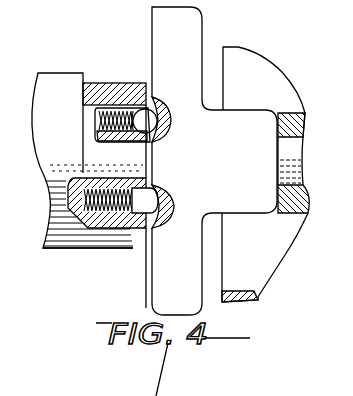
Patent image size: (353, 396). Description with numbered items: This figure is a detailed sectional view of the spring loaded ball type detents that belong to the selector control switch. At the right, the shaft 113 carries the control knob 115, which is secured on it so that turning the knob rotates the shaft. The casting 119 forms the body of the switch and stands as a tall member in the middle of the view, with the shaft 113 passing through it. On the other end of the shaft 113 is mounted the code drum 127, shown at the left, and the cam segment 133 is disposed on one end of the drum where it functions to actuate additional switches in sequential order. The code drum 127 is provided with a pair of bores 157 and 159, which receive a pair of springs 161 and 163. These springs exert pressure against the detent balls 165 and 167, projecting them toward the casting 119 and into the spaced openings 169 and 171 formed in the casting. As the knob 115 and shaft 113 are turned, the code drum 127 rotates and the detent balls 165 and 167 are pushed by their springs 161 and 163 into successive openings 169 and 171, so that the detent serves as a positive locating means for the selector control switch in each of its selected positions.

The shaft 113 is at (294, 154).
The control knob 115 is at (281, 88).
The casting 119 is at (198, 47).
The code drum 127 is at (55, 80).
The cam segment 133 is at (109, 250).
The bore 157 is at (118, 97).
The bore 159 is at (88, 207).
The spring 161 is at (110, 112).
The spring 163 is at (111, 220).
The detent ball 165 is at (155, 108).
The detent ball 167 is at (149, 226).
The spaced opening 169 is at (170, 130).
The spaced opening 171 is at (148, 193).